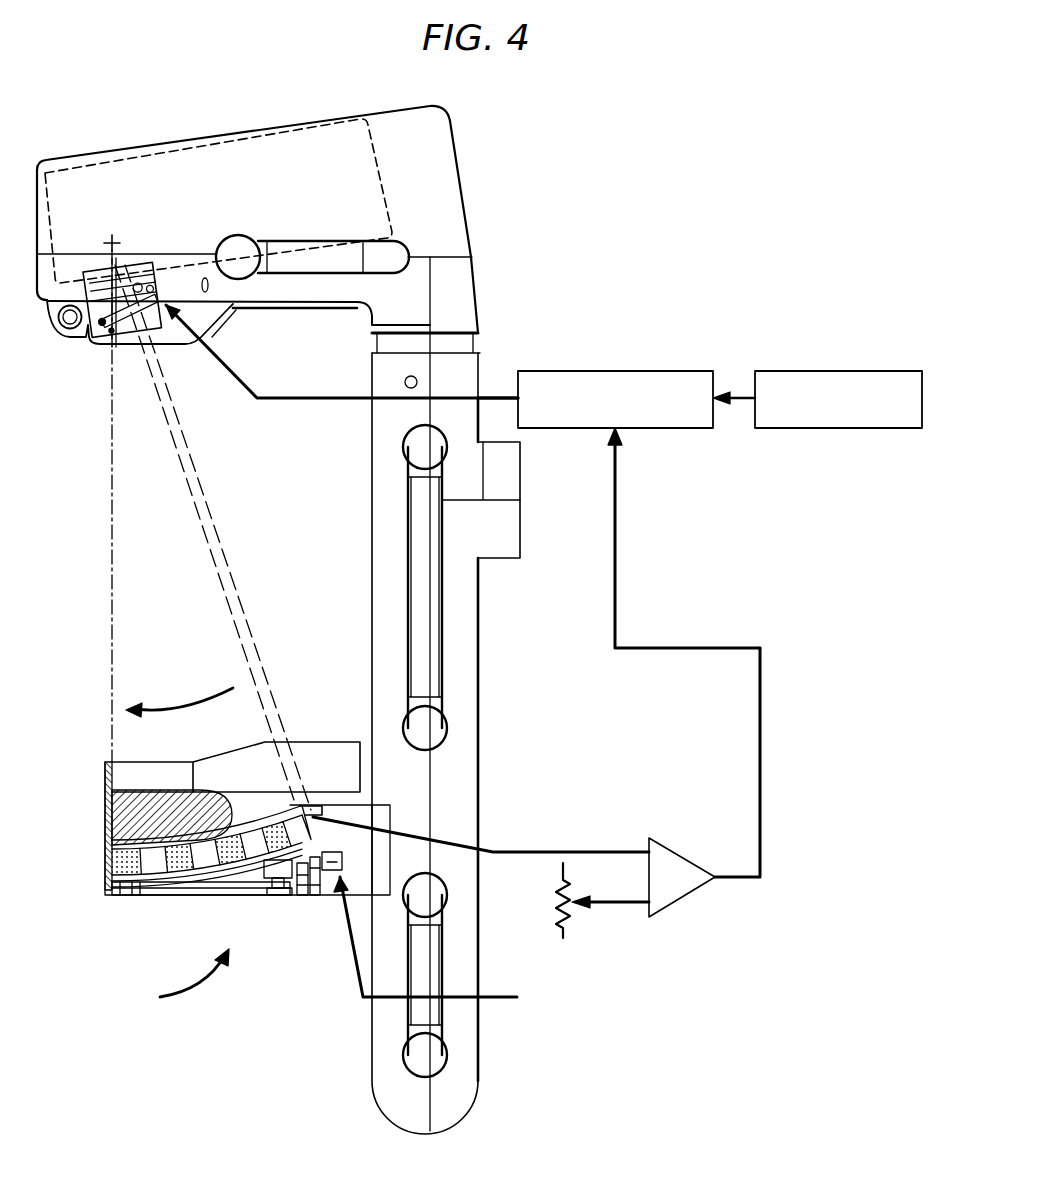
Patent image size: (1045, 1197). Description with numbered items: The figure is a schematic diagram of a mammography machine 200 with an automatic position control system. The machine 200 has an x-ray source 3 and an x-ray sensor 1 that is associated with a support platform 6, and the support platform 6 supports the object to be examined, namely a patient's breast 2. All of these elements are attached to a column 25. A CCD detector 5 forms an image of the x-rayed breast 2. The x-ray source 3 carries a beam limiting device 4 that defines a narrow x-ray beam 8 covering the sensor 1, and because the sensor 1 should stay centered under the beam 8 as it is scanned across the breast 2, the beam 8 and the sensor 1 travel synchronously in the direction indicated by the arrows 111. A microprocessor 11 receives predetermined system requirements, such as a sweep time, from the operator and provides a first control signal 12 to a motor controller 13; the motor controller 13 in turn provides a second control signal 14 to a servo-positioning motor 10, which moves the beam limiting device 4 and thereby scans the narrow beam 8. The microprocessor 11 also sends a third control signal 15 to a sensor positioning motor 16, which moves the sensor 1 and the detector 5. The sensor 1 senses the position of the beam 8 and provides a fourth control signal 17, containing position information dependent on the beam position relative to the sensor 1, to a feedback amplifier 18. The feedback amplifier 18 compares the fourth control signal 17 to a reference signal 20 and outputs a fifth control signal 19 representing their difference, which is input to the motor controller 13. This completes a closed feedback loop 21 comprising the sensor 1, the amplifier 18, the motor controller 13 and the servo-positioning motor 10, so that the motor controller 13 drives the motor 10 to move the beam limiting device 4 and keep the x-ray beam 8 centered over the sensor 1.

The x-ray sensor 1 is at (325, 814).
The patient's breast 2 is at (105, 806).
The x-ray source 3 is at (112, 242).
The beam limiting device 4 is at (122, 332).
The CCD detector 5 is at (182, 882).
The support platform 6 is at (105, 848).
The x-ray beam 8 is at (185, 448).
The servo-positioning motor 10 is at (160, 296).
The microprocessor 11 is at (828, 371).
The first control signal 12 is at (740, 395).
The motor controller 13 is at (618, 371).
The second control signal 14 is at (492, 396).
The third control signal 15 is at (492, 1000).
The sensor positioning motor 16 is at (326, 892).
The fourth control signal 17 is at (597, 851).
The feedback amplifier 18 is at (688, 893).
The fifth control signal 19 is at (763, 845).
The reference signal 20 is at (628, 906).
The feedback loop 21 is at (772, 687).
The column 25 is at (458, 670).
The arrows 111 is at (186, 703).
The mammography machine 200 is at (174, 981).